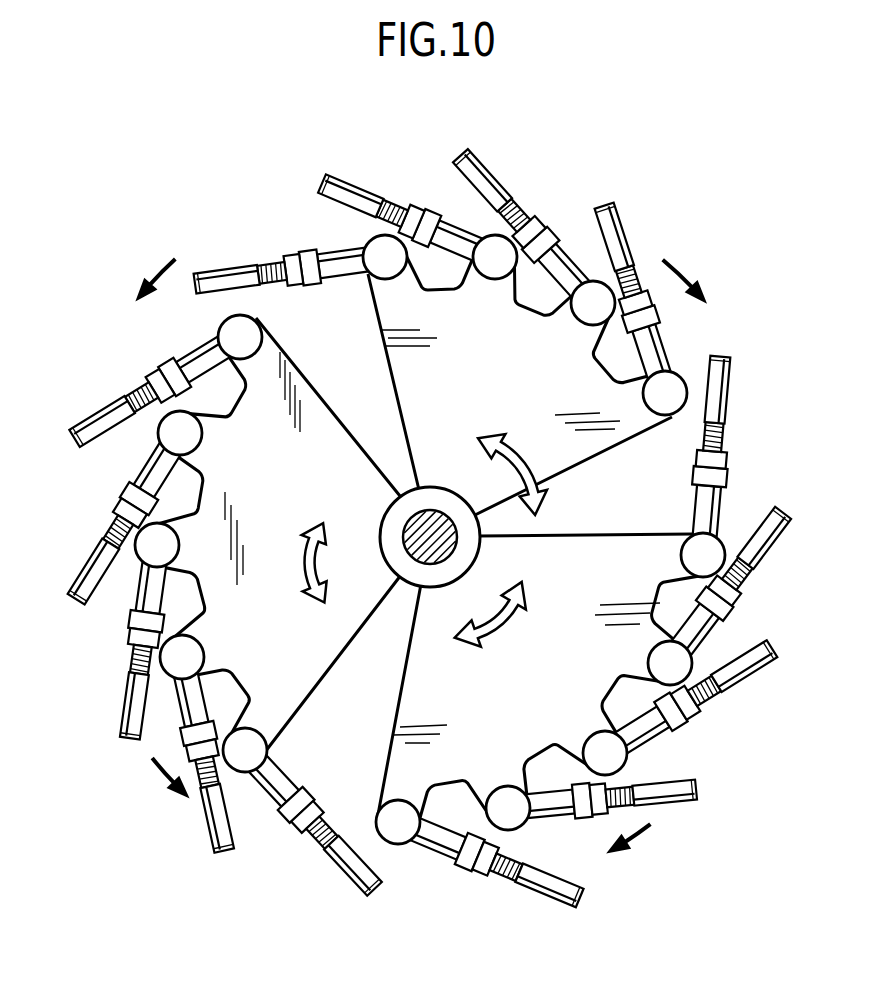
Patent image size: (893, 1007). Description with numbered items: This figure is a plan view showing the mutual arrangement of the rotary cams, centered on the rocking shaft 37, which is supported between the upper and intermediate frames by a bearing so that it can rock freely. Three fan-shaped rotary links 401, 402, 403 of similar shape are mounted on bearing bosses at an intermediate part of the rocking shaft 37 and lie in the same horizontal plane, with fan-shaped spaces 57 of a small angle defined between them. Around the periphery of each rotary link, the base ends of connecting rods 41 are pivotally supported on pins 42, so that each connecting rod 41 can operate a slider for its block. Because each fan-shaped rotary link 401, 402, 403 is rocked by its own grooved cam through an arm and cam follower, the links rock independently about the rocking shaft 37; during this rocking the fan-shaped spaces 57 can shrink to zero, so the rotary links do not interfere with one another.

The rocking shaft 37 is at (437, 520).
The connecting rod 41 is at (625, 213).
The pin 42 is at (243, 327).
The fan-shaped space 57 is at (342, 330).
The fan-shaped rotary link 401 is at (212, 510).
The fan-shaped rotary link 402 is at (513, 340).
The fan-shaped rotary link 403 is at (525, 717).